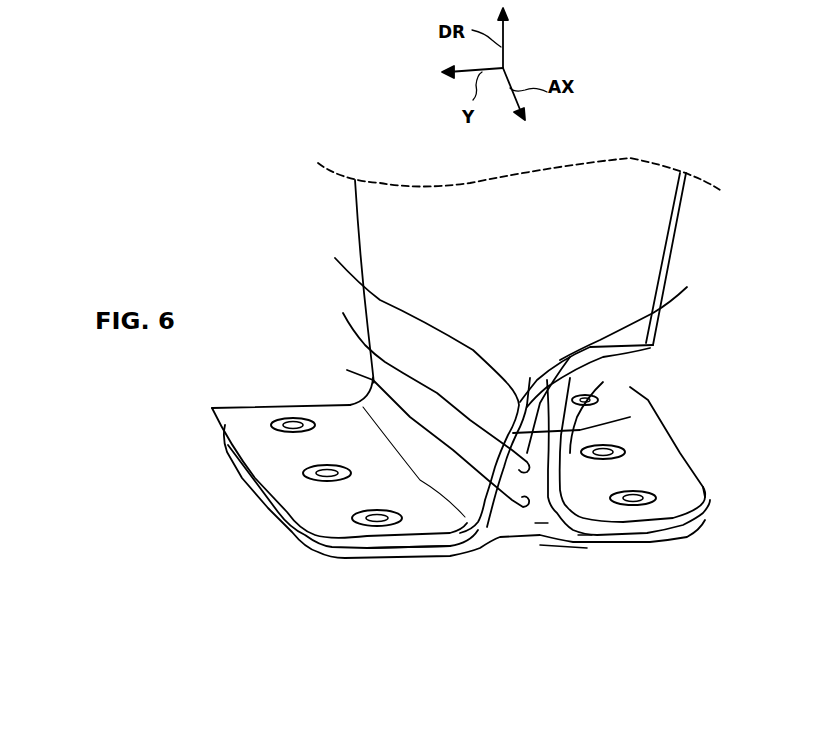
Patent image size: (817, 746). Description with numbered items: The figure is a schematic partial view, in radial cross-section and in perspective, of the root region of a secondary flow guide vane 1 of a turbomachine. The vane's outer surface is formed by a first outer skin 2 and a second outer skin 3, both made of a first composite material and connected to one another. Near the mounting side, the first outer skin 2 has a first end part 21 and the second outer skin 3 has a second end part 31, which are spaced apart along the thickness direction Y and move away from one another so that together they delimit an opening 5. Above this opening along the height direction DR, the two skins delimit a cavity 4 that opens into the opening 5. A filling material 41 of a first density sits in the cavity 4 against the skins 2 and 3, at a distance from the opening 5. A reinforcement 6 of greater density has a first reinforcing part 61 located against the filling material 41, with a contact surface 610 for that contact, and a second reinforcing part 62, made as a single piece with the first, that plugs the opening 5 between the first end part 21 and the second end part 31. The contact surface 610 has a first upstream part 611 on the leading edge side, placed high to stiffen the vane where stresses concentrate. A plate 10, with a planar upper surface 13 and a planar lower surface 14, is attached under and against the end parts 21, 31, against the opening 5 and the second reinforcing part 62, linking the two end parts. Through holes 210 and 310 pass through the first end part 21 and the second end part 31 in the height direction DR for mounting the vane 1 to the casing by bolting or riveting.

The secondary flow guide vane 1 is at (270, 285).
The first outer skin 2 is at (508, 274).
The second outer skin 3 is at (583, 370).
The cavity 4 is at (537, 447).
The opening 5 is at (585, 537).
The reinforcement 6 is at (508, 520).
The plate 10 is at (320, 557).
The planar upper surface 13 is at (540, 523).
The planar lower surface 14 is at (447, 557).
The first end part 21 is at (288, 465).
The second end part 31 is at (652, 460).
The filling material 41 is at (583, 392).
The first reinforcing part 61 is at (427, 397).
The second reinforcing part 62 is at (548, 530).
The through hole 210 is at (326, 470).
The through hole 310 is at (603, 448).
The contact surface 610 is at (411, 384).
The first upstream part 611 is at (666, 391).